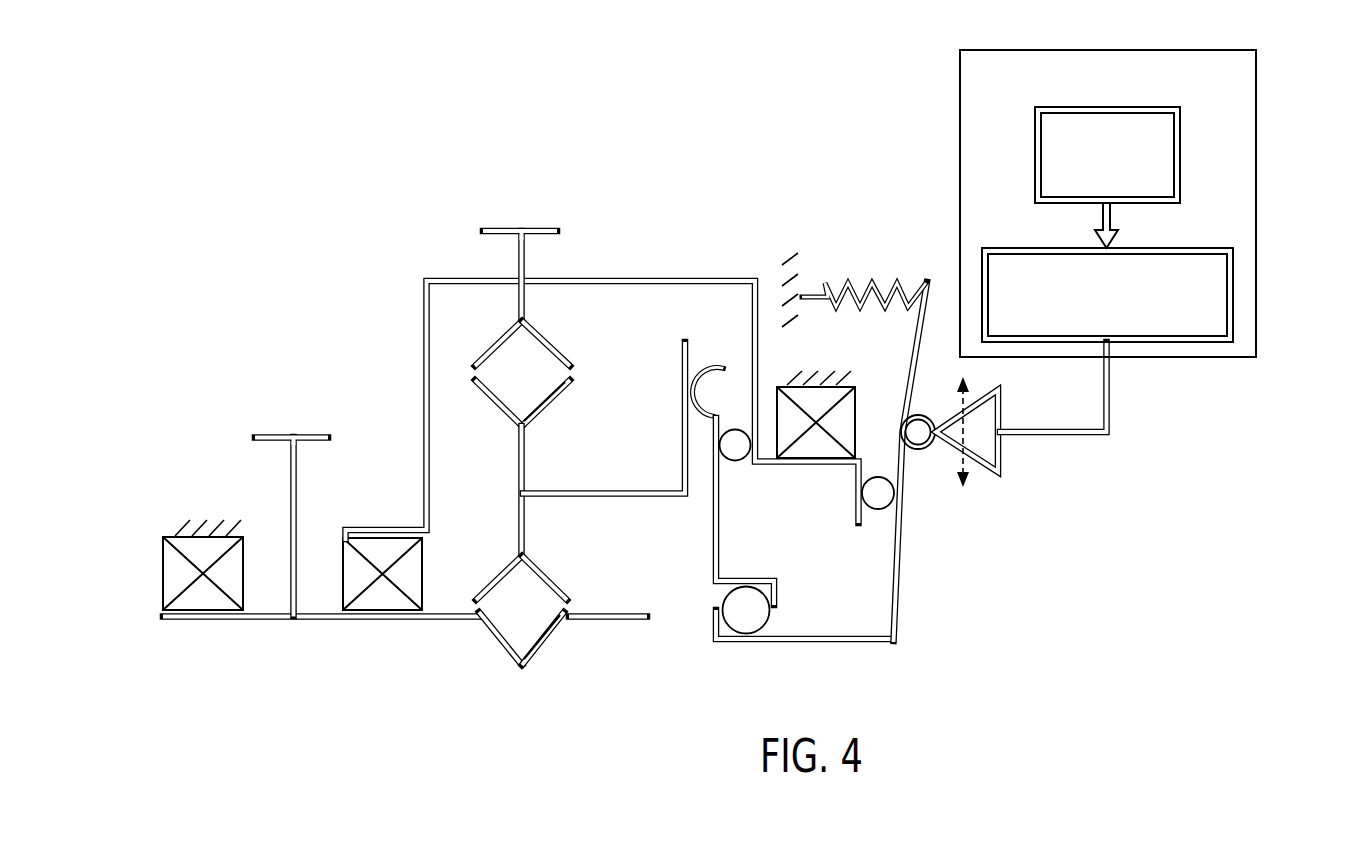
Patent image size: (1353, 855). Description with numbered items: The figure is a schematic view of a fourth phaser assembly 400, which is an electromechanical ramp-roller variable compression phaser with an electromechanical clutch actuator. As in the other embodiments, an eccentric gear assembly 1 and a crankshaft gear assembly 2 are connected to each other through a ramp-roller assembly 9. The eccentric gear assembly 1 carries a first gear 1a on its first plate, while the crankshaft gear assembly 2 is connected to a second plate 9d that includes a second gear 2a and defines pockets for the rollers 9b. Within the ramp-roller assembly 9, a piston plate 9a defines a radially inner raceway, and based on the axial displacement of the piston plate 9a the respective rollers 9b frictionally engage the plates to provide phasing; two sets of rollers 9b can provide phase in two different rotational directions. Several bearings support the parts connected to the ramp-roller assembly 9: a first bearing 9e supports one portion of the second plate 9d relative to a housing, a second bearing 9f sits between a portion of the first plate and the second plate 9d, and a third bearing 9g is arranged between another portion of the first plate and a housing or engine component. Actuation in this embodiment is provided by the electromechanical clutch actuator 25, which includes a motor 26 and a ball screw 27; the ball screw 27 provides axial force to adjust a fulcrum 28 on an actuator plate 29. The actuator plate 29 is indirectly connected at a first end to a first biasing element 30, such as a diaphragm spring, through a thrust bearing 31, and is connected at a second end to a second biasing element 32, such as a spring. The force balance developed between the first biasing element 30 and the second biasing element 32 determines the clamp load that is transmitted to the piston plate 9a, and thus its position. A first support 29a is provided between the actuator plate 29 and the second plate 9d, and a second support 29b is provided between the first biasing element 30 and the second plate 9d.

The fourth phaser assembly 400 is at (352, 254).
The eccentric gear assembly 1 is at (266, 416).
The first gear 1a is at (306, 434).
The crankshaft gear assembly 2 is at (498, 212).
The second gear 2a is at (548, 228).
The ramp-roller assembly 9 is at (498, 443).
The piston plate 9a is at (516, 468).
The rollers 9b is at (538, 622).
The second plate 9d is at (545, 338).
The first bearing 9e is at (815, 428).
The second bearing 9f is at (382, 600).
The third bearing 9g is at (188, 568).
The electromechanical clutch actuator 25 is at (1255, 190).
The motor 26 is at (1180, 150).
The ball screw 27 is at (1233, 277).
The fulcrum 28 is at (998, 468).
The actuator plate 29 is at (901, 570).
The first support 29a is at (884, 496).
The second support 29b is at (740, 446).
The first biasing element 30 is at (720, 522).
The thrust bearing 31 is at (752, 606).
The second biasing element 32 is at (848, 282).